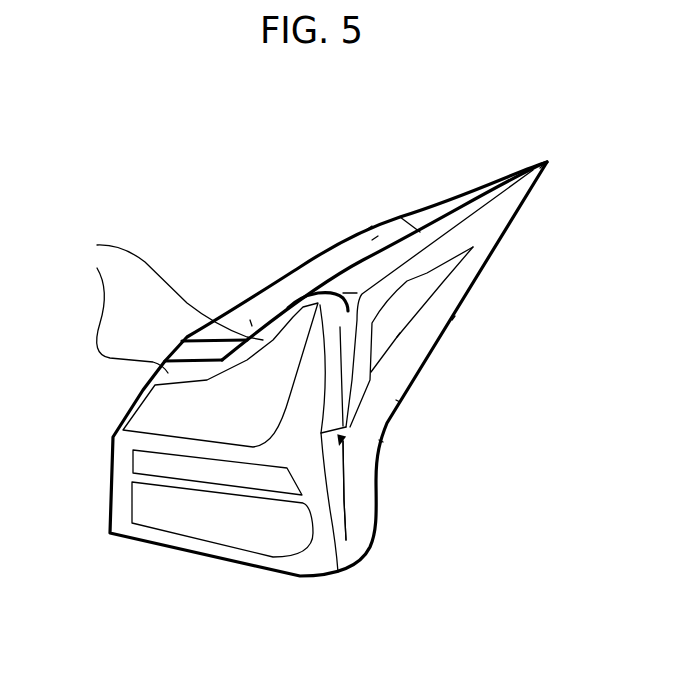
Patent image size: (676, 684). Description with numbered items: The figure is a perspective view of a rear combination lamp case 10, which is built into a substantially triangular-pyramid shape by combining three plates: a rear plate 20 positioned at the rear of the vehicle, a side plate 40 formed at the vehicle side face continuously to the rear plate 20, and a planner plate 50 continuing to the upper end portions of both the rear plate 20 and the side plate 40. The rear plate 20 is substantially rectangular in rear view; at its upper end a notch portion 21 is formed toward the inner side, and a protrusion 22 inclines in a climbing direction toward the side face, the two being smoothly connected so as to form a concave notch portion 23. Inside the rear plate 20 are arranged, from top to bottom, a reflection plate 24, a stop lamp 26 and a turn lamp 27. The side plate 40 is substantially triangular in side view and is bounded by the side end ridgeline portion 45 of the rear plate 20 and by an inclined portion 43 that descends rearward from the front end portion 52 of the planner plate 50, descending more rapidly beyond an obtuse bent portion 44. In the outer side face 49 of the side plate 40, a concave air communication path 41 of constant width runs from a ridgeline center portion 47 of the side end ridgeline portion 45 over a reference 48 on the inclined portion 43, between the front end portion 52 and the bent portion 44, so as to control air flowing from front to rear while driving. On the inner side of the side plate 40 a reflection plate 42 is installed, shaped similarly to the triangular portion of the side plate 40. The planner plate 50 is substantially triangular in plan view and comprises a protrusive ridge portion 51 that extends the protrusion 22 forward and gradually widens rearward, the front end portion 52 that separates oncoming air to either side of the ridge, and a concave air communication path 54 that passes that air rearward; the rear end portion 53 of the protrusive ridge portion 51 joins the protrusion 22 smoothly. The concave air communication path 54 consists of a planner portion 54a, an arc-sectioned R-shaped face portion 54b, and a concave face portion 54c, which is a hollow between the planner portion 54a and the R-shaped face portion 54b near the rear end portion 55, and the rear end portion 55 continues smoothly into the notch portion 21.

The rear combination lamp case 10 is at (61, 160).
The rear plate 20 is at (272, 592).
The notch portion 21 is at (117, 313).
The protrusion 22 is at (165, 281).
The concave notch portion 23 is at (143, 298).
The reflection plate 24 is at (150, 397).
The stop lamp 26 is at (137, 460).
The turn lamp 27 is at (137, 508).
The side plate 40 is at (453, 378).
The air communication path 41 is at (321, 433).
The reflection plate 42 is at (397, 337).
The inclined portion 43 is at (452, 320).
The bent portion 44 is at (383, 442).
The side end ridgeline portion 45 is at (346, 540).
The ridgeline center portion 47 is at (343, 441).
The reference 48 is at (400, 402).
The outer side face 49 is at (508, 229).
The planner plate 50 is at (357, 254).
The protrusive ridge portion 51 is at (420, 232).
The front end portion 52 is at (547, 162).
The rear end portion 53 is at (343, 293).
The concave air communication path 54 is at (269, 237).
The planner portion 54a is at (366, 230).
The R-shaped face portion 54b is at (372, 240).
The concave face portion 54c is at (250, 320).
The rear end portion 55 is at (190, 338).